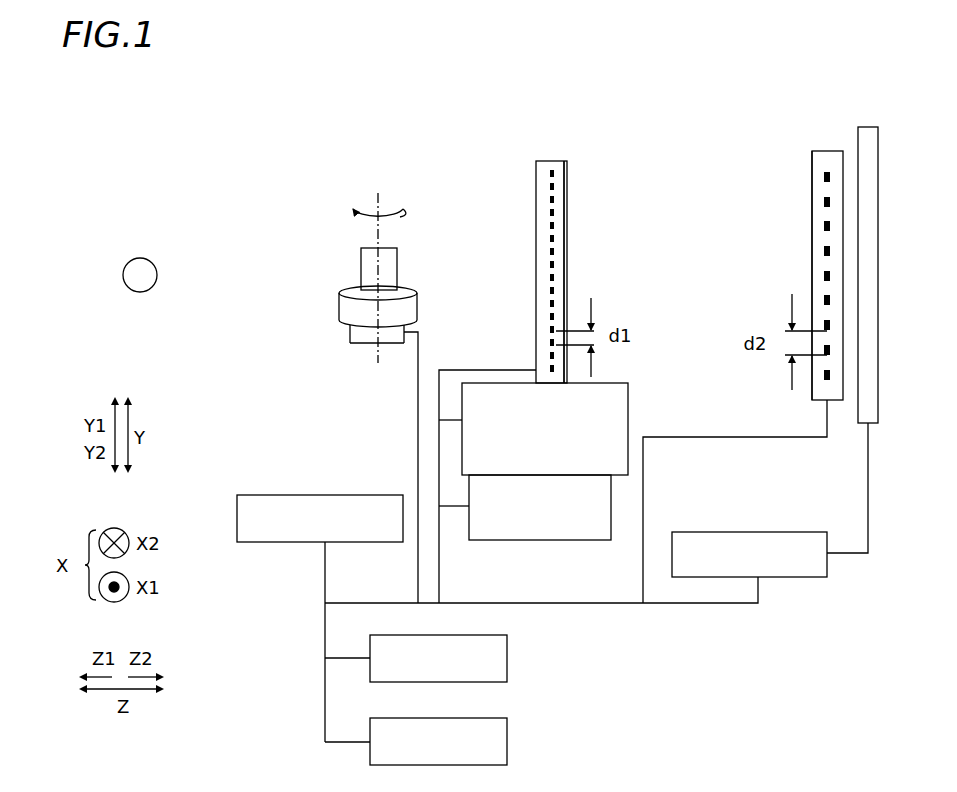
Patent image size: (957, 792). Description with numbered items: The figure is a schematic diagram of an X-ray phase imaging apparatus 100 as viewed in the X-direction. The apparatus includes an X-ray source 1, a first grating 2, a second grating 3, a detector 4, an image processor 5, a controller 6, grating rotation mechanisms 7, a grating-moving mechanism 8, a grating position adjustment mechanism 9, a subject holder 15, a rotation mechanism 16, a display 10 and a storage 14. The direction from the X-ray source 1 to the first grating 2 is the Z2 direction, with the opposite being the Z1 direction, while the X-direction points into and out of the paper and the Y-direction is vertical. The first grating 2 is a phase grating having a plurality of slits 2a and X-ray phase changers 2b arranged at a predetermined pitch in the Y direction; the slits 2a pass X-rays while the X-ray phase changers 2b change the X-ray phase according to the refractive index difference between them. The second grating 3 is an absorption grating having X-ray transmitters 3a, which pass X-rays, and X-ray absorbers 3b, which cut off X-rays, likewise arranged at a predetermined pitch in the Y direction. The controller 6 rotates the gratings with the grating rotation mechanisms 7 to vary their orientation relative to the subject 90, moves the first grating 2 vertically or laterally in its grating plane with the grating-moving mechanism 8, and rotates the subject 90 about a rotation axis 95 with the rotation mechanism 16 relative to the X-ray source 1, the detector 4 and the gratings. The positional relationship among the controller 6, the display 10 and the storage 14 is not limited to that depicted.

The X-ray phase imaging apparatus 100 is at (268, 163).
The X-ray source 1 is at (132, 260).
The rotation axis 95 is at (377, 193).
The subject 90 is at (398, 262).
The subject holder 15 is at (340, 312).
The rotation mechanism 16 is at (360, 345).
The first grating 2 is at (534, 158).
The grating rotation mechanisms 7 is at (569, 166).
The slits 2a is at (557, 240).
The X-ray phase changers 2b is at (556, 196).
The second grating 3 is at (810, 148).
The X-ray transmitters 3a is at (822, 238).
The X-ray absorbers 3b is at (824, 201).
The detector 4 is at (868, 126).
The image processor 5 is at (792, 531).
The controller 6 is at (383, 494).
The grating-moving mechanism 8 is at (580, 541).
The grating position adjustment mechanism 9 is at (630, 414).
The display 10 is at (509, 658).
The storage 14 is at (509, 744).